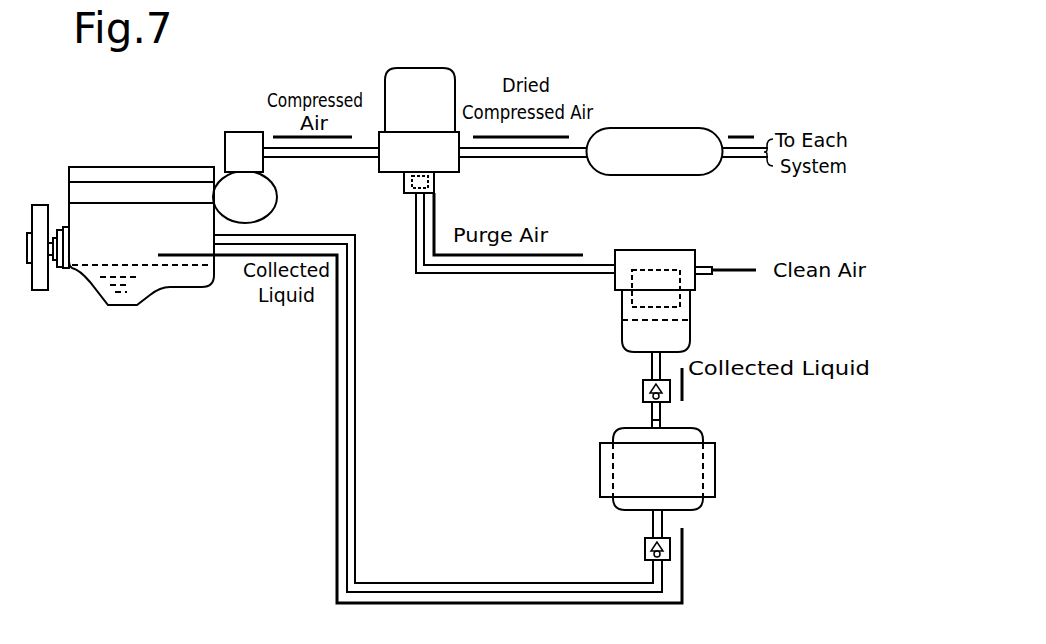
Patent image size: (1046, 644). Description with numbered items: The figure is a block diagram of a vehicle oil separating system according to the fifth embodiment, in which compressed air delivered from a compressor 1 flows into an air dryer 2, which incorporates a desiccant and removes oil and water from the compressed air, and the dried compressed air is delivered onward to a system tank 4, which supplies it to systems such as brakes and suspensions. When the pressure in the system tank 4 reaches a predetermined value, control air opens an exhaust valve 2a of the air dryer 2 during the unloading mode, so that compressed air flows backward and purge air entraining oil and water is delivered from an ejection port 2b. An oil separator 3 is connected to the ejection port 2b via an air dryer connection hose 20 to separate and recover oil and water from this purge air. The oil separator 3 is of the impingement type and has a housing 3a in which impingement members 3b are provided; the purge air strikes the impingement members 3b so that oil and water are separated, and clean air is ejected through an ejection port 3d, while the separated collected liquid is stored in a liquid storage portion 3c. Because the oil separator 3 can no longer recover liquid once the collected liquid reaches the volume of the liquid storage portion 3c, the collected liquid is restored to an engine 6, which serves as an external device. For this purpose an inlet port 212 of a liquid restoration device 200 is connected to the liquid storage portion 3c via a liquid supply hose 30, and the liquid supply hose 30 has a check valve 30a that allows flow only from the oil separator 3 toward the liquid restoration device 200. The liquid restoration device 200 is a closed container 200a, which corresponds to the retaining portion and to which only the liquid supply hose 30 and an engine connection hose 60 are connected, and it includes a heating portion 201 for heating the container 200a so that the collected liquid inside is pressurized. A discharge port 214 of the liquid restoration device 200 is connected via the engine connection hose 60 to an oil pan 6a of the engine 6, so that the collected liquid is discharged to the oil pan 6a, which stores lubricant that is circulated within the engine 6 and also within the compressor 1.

The compressor 1 is at (243, 132).
The air dryer 2 is at (456, 100).
The exhaust valve 2a is at (404, 183).
The ejection port 2b is at (434, 195).
The oil separator 3 is at (692, 250).
The housing 3a is at (622, 310).
The impingement members 3b is at (665, 270).
The liquid storage portion 3c is at (622, 343).
The ejection port 3d is at (706, 274).
The system tank 4 is at (676, 128).
The engine 6 is at (140, 167).
The oil pan 6a is at (168, 288).
The air dryer connection hose 20 is at (416, 228).
The liquid supply hose 30 is at (652, 369).
The check valve 30a is at (643, 394).
The engine connection hose 60 is at (355, 403).
The liquid restoration device 200 is at (703, 433).
The container 200a is at (700, 508).
The heating portion 201 is at (600, 466).
The inlet port 212 is at (663, 427).
The discharge port 214 is at (653, 514).